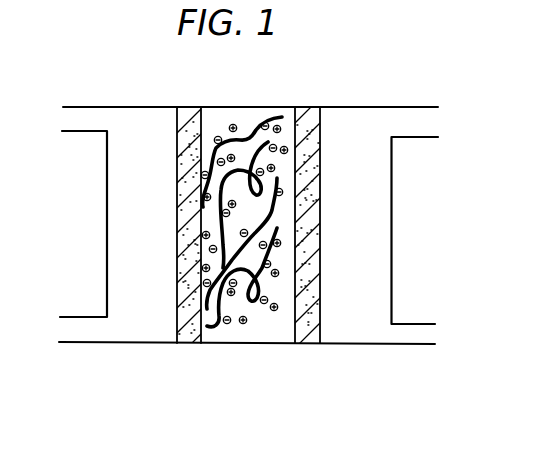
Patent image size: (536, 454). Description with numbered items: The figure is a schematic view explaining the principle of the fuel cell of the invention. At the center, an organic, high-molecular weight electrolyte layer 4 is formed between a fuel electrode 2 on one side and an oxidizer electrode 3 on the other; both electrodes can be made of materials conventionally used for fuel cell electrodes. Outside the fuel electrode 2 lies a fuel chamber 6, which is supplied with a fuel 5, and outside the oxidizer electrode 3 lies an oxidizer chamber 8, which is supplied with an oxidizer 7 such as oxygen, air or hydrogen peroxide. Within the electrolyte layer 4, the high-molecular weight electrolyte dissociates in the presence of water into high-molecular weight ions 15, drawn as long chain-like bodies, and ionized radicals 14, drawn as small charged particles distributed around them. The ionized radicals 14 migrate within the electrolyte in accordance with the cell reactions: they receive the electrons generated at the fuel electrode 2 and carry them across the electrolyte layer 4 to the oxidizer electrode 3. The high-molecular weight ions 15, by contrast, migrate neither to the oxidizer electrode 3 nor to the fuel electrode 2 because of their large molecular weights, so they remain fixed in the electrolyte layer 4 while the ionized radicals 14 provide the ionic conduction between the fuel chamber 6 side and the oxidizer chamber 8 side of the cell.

The fuel electrode 2 is at (306, 338).
The oxidizer electrode 3 is at (185, 340).
The organic, high-molecular weight electrolyte layer 4 is at (243, 334).
The fuel 5 is at (386, 334).
The fuel chamber 6 is at (392, 238).
The oxidizer 7 is at (102, 328).
The oxidizer chamber 8 is at (107, 228).
The ionized radicals 14 is at (232, 123).
The high-molecular weight ions 15 is at (264, 113).